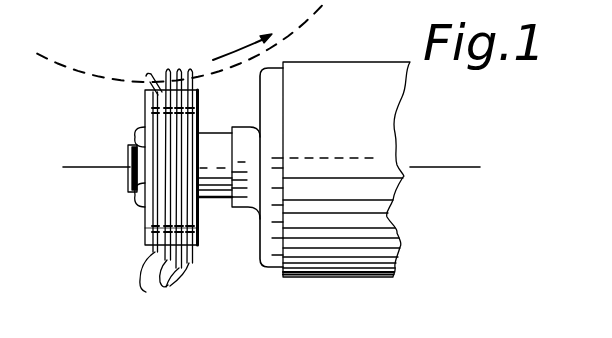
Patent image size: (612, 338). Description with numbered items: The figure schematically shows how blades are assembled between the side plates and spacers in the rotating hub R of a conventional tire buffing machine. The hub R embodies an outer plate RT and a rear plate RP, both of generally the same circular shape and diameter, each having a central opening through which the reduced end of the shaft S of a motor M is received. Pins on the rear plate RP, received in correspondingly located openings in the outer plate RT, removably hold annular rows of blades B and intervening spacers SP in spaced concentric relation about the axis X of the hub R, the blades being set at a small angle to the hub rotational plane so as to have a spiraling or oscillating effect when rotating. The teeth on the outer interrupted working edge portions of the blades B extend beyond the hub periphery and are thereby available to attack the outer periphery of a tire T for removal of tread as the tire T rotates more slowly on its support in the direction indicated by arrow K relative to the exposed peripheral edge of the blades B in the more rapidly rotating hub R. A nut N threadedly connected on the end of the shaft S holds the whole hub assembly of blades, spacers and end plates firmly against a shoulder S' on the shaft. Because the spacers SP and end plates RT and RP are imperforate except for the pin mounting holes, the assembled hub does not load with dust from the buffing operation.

The tire T is at (95, 72).
The spacers SP is at (158, 77).
The arrow K is at (234, 49).
The motor M is at (350, 132).
The rear plate RP is at (202, 215).
The shoulder S' is at (213, 151).
The axis X is at (272, 167).
The rotating hub R is at (128, 221).
The nut N is at (137, 135).
The shaft S is at (98, 174).
The blades B is at (164, 277).
The outer plate RT is at (141, 228).